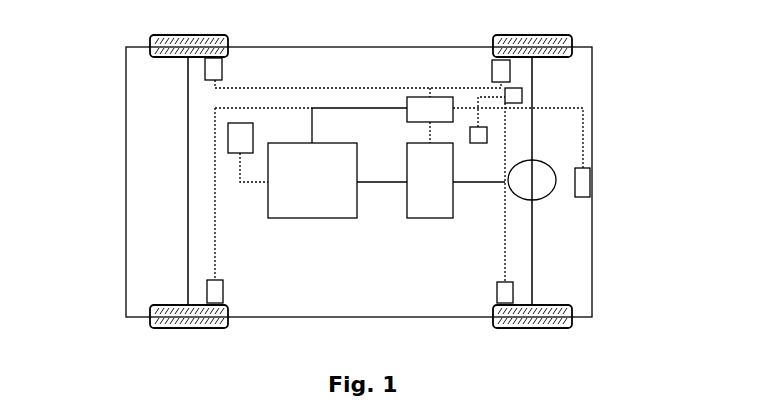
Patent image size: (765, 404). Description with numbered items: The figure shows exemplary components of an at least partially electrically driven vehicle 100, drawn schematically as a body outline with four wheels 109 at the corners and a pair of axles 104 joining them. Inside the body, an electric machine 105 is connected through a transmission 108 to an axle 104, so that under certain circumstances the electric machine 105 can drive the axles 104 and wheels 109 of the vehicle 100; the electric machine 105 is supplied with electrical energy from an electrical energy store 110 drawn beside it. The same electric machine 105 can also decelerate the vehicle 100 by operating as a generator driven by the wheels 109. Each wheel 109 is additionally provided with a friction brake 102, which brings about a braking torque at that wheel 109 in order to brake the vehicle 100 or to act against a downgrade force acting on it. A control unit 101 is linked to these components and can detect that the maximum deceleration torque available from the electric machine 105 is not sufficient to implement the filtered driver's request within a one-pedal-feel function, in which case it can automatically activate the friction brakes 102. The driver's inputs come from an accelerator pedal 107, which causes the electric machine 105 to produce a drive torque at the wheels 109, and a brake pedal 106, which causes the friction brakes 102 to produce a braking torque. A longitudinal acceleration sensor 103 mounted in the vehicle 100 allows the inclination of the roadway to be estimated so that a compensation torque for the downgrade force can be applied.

The vehicle 100 is at (106, 170).
The control unit 101 is at (406, 115).
The friction brake 102 is at (222, 70).
The longitudinal acceleration sensor 103 is at (590, 185).
The axle 104 is at (532, 258).
The electric machine 105 is at (302, 218).
The brake pedal 106 is at (522, 93).
The accelerator pedal 107 is at (478, 143).
The transmission 108 is at (430, 218).
The wheel 109 is at (572, 53).
The electrical energy store 110 is at (228, 140).